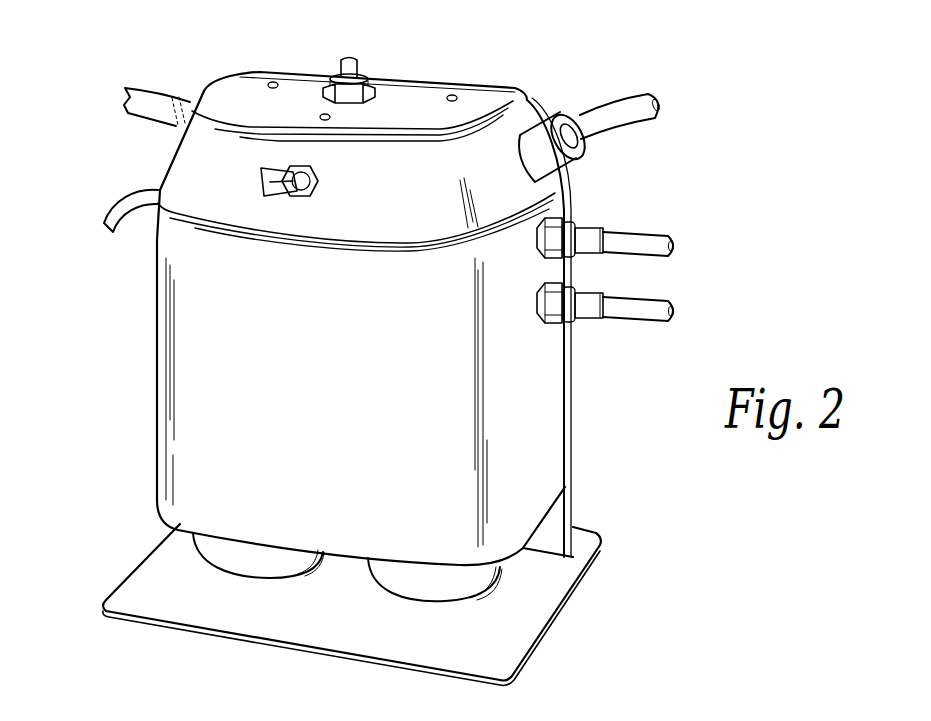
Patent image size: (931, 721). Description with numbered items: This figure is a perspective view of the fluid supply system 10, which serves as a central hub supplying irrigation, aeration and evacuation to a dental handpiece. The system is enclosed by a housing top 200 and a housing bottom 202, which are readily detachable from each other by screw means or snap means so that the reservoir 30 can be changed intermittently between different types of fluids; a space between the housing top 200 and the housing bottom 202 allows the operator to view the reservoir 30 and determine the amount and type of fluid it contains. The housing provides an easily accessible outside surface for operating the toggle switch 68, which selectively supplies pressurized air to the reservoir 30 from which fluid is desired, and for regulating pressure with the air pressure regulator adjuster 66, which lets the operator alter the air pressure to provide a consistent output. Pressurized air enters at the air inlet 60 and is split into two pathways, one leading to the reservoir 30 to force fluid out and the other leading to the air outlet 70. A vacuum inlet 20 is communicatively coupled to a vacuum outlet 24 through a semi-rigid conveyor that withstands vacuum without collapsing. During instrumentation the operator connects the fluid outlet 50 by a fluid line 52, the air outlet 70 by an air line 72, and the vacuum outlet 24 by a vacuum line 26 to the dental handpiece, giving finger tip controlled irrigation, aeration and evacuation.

The fluid supply system 10 is at (118, 74).
The vacuum inlet 20 is at (173, 92).
The vacuum outlet 24 is at (564, 115).
The vacuum line 26 is at (622, 100).
The reservoir 30 is at (417, 594).
The fluid outlet 50 is at (572, 215).
The fluid line 52 is at (650, 238).
The air inlet 60 is at (147, 186).
The air pressure regulator adjuster 66 is at (360, 67).
The toggle switch 68 is at (285, 198).
The air outlet 70 is at (553, 325).
The air line 72 is at (648, 301).
The housing top 200 is at (155, 380).
The housing bottom 202 is at (130, 598).